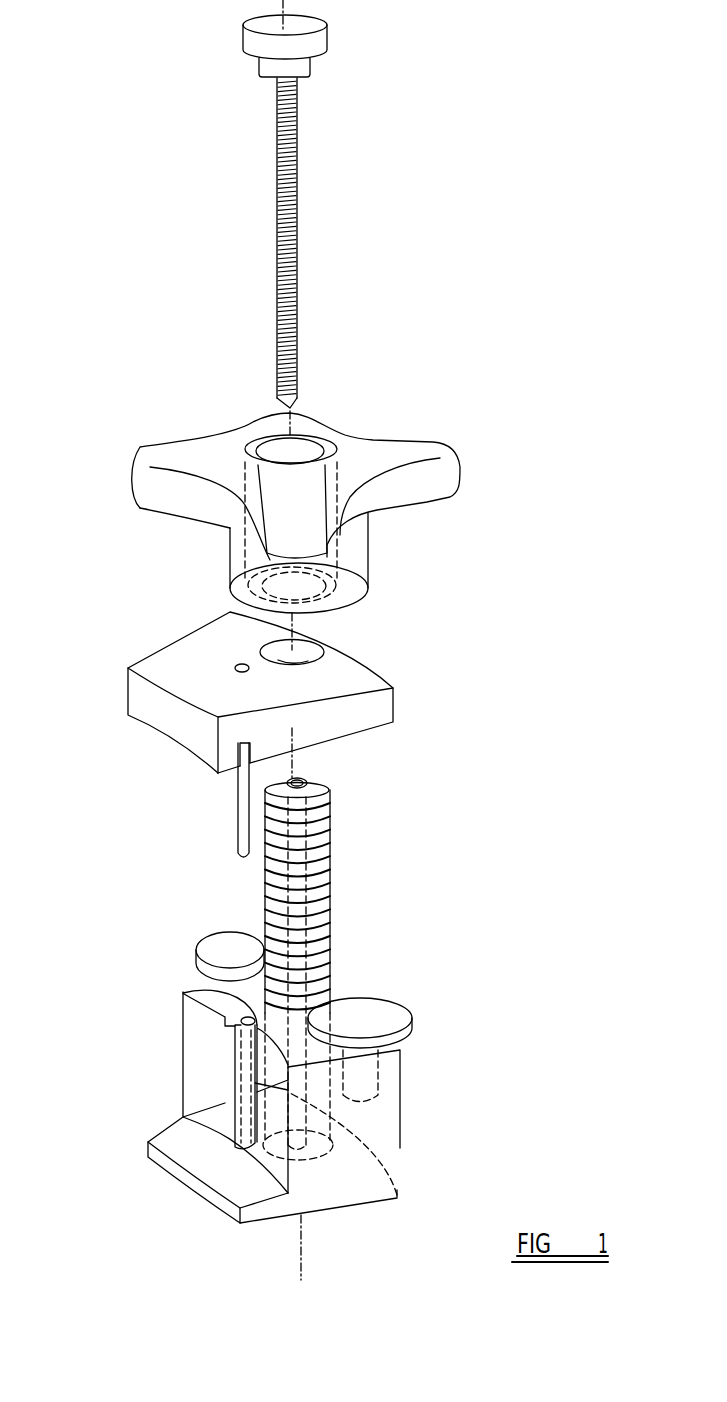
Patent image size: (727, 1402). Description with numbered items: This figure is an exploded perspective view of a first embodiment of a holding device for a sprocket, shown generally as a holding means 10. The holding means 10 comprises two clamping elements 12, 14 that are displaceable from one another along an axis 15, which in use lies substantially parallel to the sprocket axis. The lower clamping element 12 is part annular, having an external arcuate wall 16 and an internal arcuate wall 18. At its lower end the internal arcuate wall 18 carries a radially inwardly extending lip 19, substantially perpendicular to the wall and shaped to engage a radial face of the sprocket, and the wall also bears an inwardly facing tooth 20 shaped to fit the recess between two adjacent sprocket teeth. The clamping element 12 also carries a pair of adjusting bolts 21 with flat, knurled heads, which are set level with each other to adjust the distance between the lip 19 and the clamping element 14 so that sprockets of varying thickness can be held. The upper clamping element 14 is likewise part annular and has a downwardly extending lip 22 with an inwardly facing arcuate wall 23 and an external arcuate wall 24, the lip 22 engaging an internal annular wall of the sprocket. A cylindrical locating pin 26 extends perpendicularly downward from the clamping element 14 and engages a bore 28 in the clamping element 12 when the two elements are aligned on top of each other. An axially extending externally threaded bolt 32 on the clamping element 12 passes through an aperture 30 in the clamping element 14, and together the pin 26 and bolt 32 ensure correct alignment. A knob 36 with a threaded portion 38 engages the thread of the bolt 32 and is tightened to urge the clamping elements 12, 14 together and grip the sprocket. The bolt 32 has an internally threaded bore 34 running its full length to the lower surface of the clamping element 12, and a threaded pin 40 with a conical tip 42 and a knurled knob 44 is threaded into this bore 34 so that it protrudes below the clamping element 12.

The holding means 10 is at (432, 1016).
The clamping element 12 is at (263, 1186).
The clamping element 14 is at (247, 741).
The axis 15 is at (297, 1230).
The external arcuate wall 16 is at (400, 1138).
The internal arcuate wall 18 is at (205, 1047).
The lip 19 is at (197, 1170).
The tooth 20 is at (235, 1080).
The adjusting bolts 21 is at (397, 993).
The lip 22 is at (217, 775).
The inwardly facing arcuate wall 23 is at (163, 705).
The external arcuate wall 24 is at (251, 757).
The locating pin 26 is at (235, 827).
The bore 28 is at (183, 993).
The aperture 30 is at (327, 648).
The externally threaded bolt 32 is at (348, 968).
The internally threaded bore 34 is at (312, 777).
The knob 36 is at (296, 488).
The threaded portion 38 is at (260, 442).
The threaded pin 40 is at (300, 232).
The conical tip 42 is at (300, 408).
The knurled knob 44 is at (328, 38).